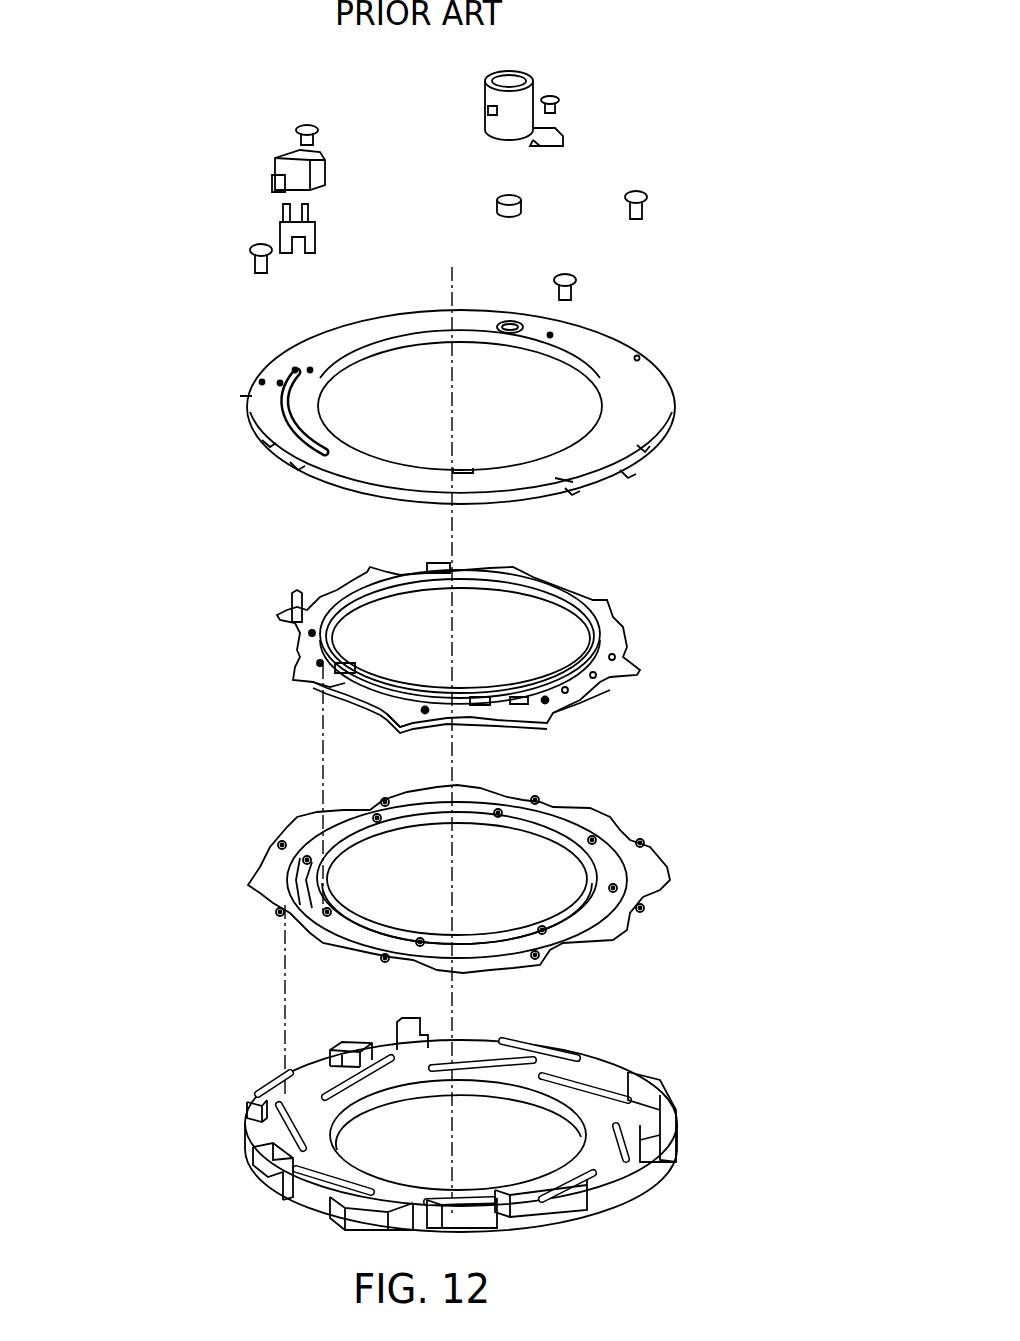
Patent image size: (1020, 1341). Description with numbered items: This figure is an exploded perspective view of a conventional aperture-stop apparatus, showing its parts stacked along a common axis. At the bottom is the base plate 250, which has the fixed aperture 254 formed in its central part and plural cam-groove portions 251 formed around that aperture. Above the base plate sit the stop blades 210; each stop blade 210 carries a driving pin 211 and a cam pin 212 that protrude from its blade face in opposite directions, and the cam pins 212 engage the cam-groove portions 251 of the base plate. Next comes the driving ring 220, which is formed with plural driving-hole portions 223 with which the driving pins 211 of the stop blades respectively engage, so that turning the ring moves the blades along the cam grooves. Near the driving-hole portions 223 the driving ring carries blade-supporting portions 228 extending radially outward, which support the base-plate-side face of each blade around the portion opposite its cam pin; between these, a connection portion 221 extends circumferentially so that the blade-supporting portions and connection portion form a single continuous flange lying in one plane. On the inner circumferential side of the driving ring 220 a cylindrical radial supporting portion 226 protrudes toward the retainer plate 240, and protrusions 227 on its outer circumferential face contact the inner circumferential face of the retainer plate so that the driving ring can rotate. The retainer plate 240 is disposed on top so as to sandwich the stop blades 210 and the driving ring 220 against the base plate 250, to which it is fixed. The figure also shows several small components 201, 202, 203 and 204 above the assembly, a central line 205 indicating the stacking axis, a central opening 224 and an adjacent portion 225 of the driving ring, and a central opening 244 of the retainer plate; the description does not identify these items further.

The solenoid 201 is at (482, 98).
The nut 202 is at (500, 200).
The clip 203 is at (280, 230).
The switch block 204 is at (277, 167).
The central axis 205 is at (452, 267).
The stop blade 210 is at (406, 889).
The driving pin 211 is at (300, 922).
The cam pin 212 is at (273, 912).
The driving ring 220 is at (458, 654).
The connection portion 221 is at (456, 604).
The driving-hole portion 223 is at (318, 687).
The opening 224 is at (488, 610).
The lip 225 is at (587, 590).
The radial supporting portion 226 is at (575, 700).
The protrusion 227 is at (610, 647).
The blade-supporting portion 228 is at (397, 720).
The retainer plate 240 is at (422, 398).
The opening of cover ring 244 is at (488, 378).
The base plate 250 is at (409, 1116).
The cam-groove portion 251 is at (248, 1118).
The fixed aperture 254 is at (463, 1130).